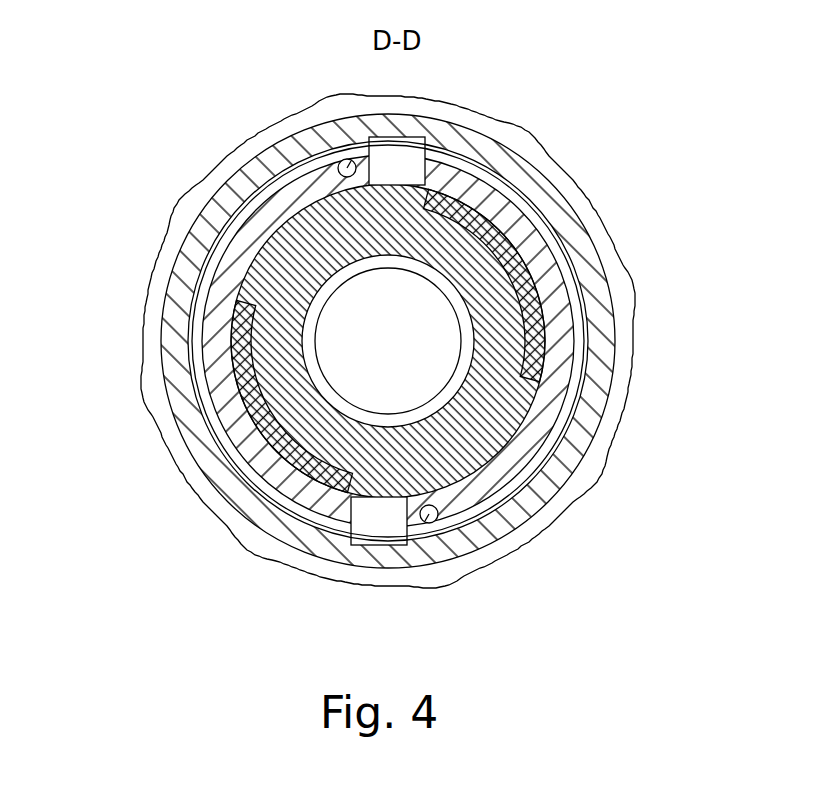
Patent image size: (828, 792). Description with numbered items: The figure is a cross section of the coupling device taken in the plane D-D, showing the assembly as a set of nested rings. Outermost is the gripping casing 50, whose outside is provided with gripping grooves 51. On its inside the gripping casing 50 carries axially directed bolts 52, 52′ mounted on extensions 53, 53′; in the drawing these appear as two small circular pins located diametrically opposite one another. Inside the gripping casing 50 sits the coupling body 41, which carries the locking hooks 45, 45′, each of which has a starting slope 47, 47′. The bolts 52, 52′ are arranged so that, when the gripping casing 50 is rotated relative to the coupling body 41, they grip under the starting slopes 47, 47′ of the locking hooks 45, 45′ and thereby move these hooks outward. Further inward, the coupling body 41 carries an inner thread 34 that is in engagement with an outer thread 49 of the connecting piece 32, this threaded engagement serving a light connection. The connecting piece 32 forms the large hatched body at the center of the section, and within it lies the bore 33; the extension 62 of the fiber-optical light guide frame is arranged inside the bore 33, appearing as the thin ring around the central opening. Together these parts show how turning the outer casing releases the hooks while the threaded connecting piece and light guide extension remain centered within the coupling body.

The connecting piece 32 is at (484, 265).
The bore 33 is at (313, 383).
The inner thread 34 is at (540, 349).
The coupling body 41 is at (213, 303).
The locking hook 45 is at (503, 147).
The locking hook 45′ is at (363, 514).
The starting slope 47 is at (398, 170).
The starting slope 47′ is at (382, 547).
The outer thread 49 is at (543, 377).
The gripping casing 50 is at (218, 205).
The gripping grooves 51 is at (158, 396).
The bolt 52 is at (345, 158).
The bolt 52′ is at (436, 521).
The extension 53 is at (328, 177).
The extension 53′ is at (465, 498).
The extension of the fiber-optical light guide frame 62 is at (318, 384).